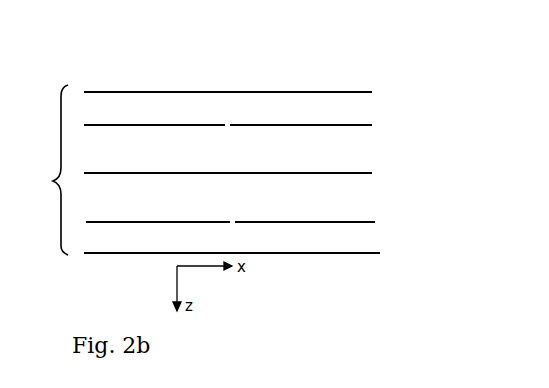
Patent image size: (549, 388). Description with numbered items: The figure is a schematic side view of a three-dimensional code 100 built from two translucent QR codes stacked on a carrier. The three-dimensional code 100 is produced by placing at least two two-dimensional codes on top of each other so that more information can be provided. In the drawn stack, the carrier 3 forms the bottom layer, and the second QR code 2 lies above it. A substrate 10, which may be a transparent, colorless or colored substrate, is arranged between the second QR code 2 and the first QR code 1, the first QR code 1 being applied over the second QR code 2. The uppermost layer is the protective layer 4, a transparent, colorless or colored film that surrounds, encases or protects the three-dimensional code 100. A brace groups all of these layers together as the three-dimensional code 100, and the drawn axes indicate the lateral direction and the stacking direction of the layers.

The 3D-Code 100 is at (35, 170).
The protective layer 4 is at (373, 92).
The first QR code 1 is at (375, 125).
The substrate 10 is at (376, 173).
The second QR code 2 is at (380, 222).
The carrier 3 is at (381, 253).